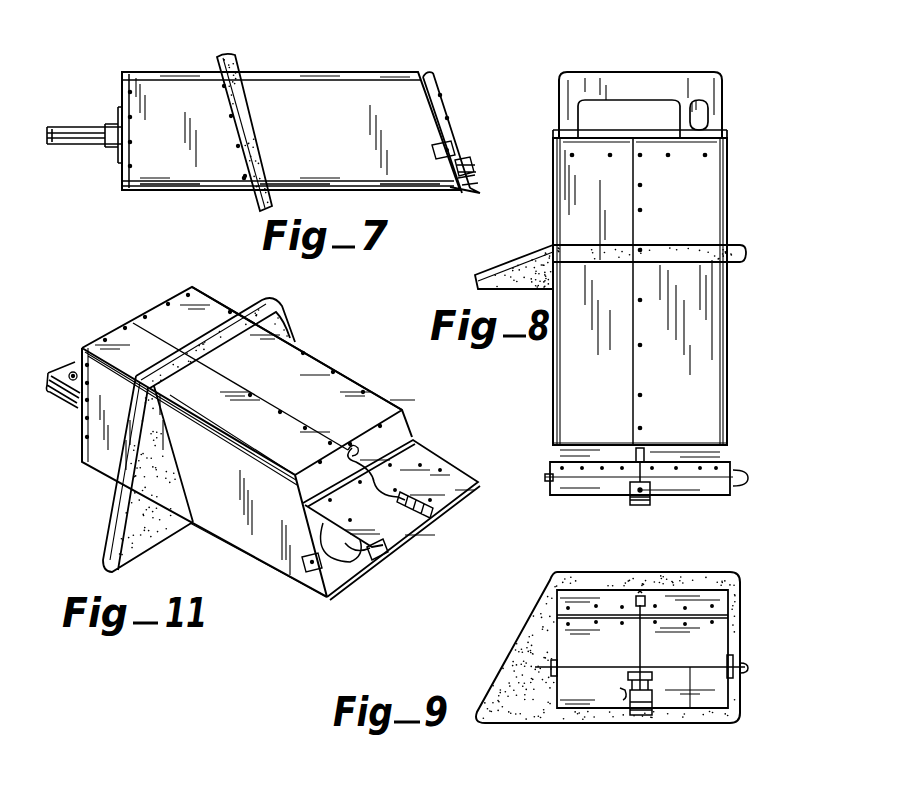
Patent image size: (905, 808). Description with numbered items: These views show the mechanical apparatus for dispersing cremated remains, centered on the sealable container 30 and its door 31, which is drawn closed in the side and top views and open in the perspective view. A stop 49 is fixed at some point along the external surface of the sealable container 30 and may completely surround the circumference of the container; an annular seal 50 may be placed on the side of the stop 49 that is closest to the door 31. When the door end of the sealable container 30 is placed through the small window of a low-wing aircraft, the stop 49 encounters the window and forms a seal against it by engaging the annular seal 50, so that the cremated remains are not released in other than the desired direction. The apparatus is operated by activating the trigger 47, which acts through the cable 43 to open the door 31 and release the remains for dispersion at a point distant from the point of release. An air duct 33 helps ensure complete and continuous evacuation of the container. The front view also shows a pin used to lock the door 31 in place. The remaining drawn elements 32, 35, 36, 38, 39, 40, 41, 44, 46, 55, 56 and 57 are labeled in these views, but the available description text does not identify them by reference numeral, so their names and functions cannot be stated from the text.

In FIG. 7, the sealable container 30 is at (170, 85).
In FIG. 8, the sealable container 30 is at (705, 355).
In FIG. 11, the sealable container 30 is at (240, 275).
In FIG. 11, the door 31 is at (425, 462).
In FIG. 11, the lid opening direction 32 is at (447, 533).
In FIG. 11, the air duct 33 is at (362, 553).
In FIG. 7, the side wall 35 is at (167, 162).
In FIG. 8, the side wall 35 is at (585, 208).
In FIG. 11, the side wall 35 is at (280, 555).
In FIG. 8, the front panel 36 is at (705, 175).
In FIG. 11, the front panel 36 is at (345, 392).
In FIG. 8, the bottom plate 38 is at (727, 462).
In FIG. 9, the bottom plate 38 is at (728, 615).
In FIG. 9, the end panel 39 is at (578, 608).
In FIG. 9, the support member 40 is at (698, 670).
In FIG. 9, the pivot rod 41 is at (553, 660).
In FIG. 7, the cable 43 is at (442, 122).
In FIG. 7, the latch 44 is at (470, 165).
In FIG. 8, the latch 44 is at (635, 503).
In FIG. 7, the handle plate 46 is at (75, 125).
In FIG. 8, the handle plate 46 is at (660, 45).
In FIG. 11, the handle plate 46 is at (60, 385).
In FIG. 8, the trigger 47 is at (703, 108).
In FIG. 7, the stop 49 is at (243, 178).
In FIG. 7, the annular seal 50 is at (233, 58).
In FIG. 8, the annular seal 50 is at (482, 291).
In FIG. 11, the annular seal 50 is at (150, 535).
In FIG. 9, the annular seal 50 is at (537, 623).
In FIG. 9, the actuating rod 55 is at (645, 677).
In FIG. 9, the latch mechanism 56 is at (638, 715).
In FIG. 9, the lever arm 57 is at (625, 690).